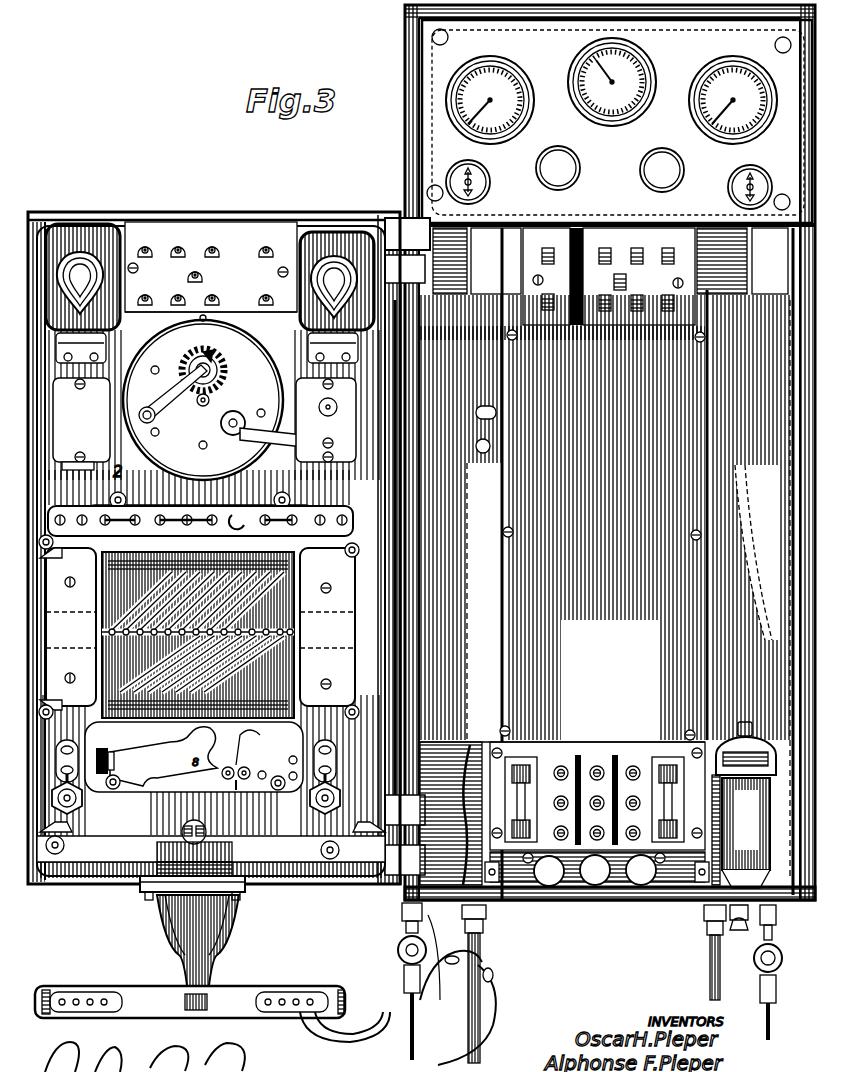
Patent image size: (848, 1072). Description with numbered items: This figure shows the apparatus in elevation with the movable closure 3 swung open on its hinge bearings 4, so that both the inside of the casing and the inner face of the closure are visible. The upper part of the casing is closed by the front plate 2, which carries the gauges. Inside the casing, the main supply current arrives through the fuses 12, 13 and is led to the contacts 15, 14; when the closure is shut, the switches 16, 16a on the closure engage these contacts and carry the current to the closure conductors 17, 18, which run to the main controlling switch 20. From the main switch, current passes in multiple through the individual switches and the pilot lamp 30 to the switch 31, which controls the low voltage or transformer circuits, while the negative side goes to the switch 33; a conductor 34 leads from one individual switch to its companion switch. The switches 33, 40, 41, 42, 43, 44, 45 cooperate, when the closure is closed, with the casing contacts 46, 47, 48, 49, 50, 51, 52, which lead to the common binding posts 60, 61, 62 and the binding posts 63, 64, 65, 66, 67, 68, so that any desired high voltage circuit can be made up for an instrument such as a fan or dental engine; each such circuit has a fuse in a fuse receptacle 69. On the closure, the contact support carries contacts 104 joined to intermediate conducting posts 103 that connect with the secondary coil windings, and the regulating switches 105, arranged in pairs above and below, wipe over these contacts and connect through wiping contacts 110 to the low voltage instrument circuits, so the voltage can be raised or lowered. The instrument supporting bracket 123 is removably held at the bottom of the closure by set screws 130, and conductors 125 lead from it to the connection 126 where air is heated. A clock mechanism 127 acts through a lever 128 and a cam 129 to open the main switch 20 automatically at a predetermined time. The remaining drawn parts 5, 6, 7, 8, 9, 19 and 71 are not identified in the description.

The front plate 2 is at (610, 452).
The movable closure 3 is at (82, 212).
The bearings 4 is at (404, 535).
The pipe connection 5 is at (765, 1015).
The filter canister 6 is at (744, 805).
The pipe fitting 7 is at (410, 1000).
The pipe 8 is at (477, 984).
The pipe 9 is at (710, 984).
The fuse 12 is at (522, 808).
The fuse 13 is at (676, 799).
The contact 14 is at (602, 257).
The contact 15 is at (543, 247).
The switch 16 is at (197, 269).
The switch 16a is at (266, 243).
The conductor 17 is at (461, 564).
The conductor 18 is at (470, 556).
The pipe 19 is at (742, 261).
The main controlling switch 20 is at (328, 440).
The pilot lamp 30 is at (83, 293).
The switch 31 is at (81, 424).
The switch 33 is at (208, 284).
The conductor 34 is at (337, 297).
The switch 40 is at (210, 290).
The switch 41 is at (212, 242).
The switch 42 is at (180, 243).
The switch 43 is at (178, 291).
The switch 44 is at (145, 243).
The switch 45 is at (145, 291).
The contact 46 is at (548, 292).
The contact 47 is at (615, 312).
The contact 48 is at (608, 284).
The contact 49 is at (621, 247).
The contact 50 is at (657, 312).
The contact 51 is at (672, 245).
The contact 52 is at (661, 287).
The common binding post 60 is at (597, 766).
The common binding post 61 is at (597, 800).
The common binding post 62 is at (597, 830).
The binding post 63 is at (561, 766).
The binding post 64 is at (561, 802).
The binding post 65 is at (554, 825).
The binding post 66 is at (633, 830).
The binding post 67 is at (633, 800).
The binding post 68 is at (633, 767).
The fuse receptacle 69 is at (76, 800).
The side plate 71 is at (118, 572).
The conducting post 103 is at (108, 632).
The contact 104 is at (112, 760).
The switch 105 is at (163, 756).
The wiping contact 110 is at (222, 770).
The instrument supporting bracket 123 is at (205, 925).
The conductor 125 is at (370, 1020).
The connection 126 is at (485, 952).
The clock mechanism 127 is at (200, 350).
The lever 128 is at (287, 446).
The cam 129 is at (220, 394).
The set screw 130 is at (147, 898).